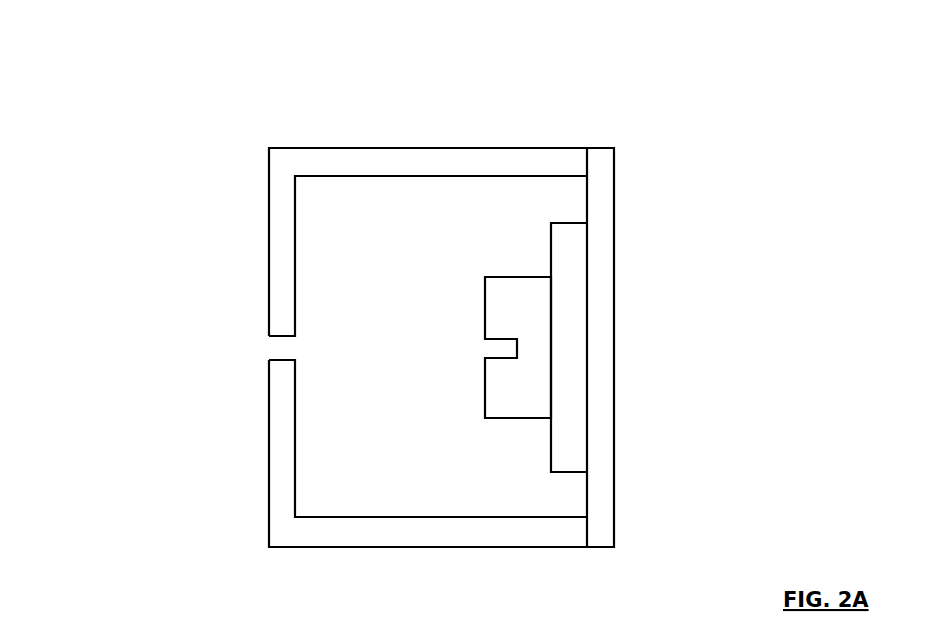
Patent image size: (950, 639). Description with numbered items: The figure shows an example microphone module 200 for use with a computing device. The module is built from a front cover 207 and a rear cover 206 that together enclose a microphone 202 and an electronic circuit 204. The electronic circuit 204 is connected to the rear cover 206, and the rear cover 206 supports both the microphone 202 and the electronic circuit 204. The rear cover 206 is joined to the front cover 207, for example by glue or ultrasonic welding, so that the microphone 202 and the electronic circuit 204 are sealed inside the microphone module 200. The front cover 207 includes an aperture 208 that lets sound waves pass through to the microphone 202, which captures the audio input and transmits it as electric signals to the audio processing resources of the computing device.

The microphone module 200 is at (250, 123).
The microphone 202 is at (510, 298).
The electronic circuit 204 is at (566, 317).
The rear cover 206 is at (598, 500).
The front cover 207 is at (283, 435).
The aperture 208 is at (282, 348).